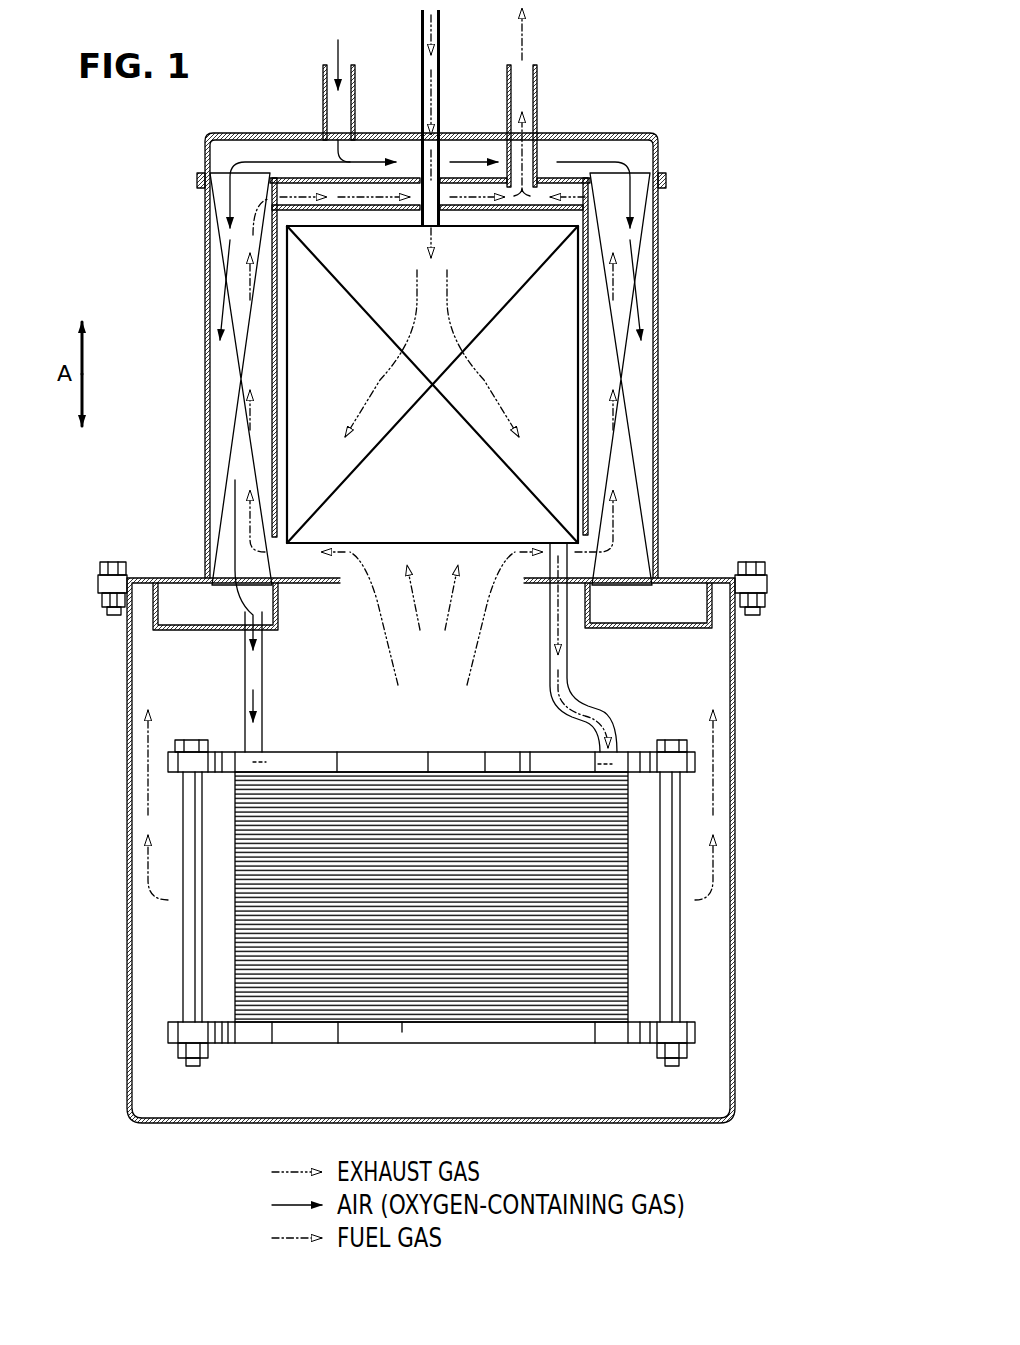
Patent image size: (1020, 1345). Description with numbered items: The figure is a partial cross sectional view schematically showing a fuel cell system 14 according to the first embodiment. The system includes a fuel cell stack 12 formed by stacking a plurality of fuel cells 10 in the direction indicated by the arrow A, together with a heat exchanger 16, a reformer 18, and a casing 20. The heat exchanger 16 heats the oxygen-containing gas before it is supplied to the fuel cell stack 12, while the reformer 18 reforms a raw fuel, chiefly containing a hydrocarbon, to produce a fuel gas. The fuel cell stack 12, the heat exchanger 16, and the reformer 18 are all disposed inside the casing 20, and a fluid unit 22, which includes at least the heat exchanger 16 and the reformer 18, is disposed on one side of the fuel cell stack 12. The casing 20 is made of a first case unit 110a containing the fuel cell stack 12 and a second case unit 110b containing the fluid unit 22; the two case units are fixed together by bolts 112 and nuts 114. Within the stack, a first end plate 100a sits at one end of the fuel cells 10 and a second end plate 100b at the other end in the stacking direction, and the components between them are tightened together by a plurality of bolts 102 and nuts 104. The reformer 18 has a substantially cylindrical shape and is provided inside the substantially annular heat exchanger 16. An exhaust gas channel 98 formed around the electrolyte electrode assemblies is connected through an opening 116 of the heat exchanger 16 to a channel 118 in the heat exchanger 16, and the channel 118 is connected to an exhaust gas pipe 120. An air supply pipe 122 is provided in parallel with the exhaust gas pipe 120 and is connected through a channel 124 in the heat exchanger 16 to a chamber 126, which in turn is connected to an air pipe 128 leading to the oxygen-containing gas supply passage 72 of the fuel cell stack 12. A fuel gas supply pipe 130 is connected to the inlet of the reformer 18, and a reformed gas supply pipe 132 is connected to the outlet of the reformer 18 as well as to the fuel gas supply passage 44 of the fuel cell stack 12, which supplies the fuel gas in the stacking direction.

The fuel cell 10 is at (632, 925).
The fuel cell stack 12 is at (697, 818).
The fuel cell system 14 is at (725, 89).
The heat exchanger 16 is at (633, 358).
The reformer 18 is at (566, 345).
The casing 20 is at (188, 530).
The fluid unit 22 is at (714, 268).
The fuel gas supply passage 44 is at (605, 760).
The oxygen-containing gas supply passage 72 is at (268, 758).
The exhaust gas channel 98 is at (147, 799).
The first end plate 100a is at (425, 750).
The second end plate 100b is at (450, 1046).
The bolt 102 is at (192, 739).
The nut 104 is at (195, 1067).
The first case unit 110a is at (127, 696).
The second case unit 110b is at (205, 384).
The bolt 112 is at (117, 562).
The nut 114 is at (100, 602).
The opening 116 is at (591, 565).
The channel 118 is at (612, 502).
The exhaust gas pipe 120 is at (538, 100).
The air supply pipe 122 is at (356, 100).
The channel 124 is at (222, 298).
The chamber 126 is at (198, 613).
The air pipe 128 is at (264, 673).
The fuel gas supply pipe 130 is at (441, 72).
The reformed gas supply pipe 132 is at (568, 661).